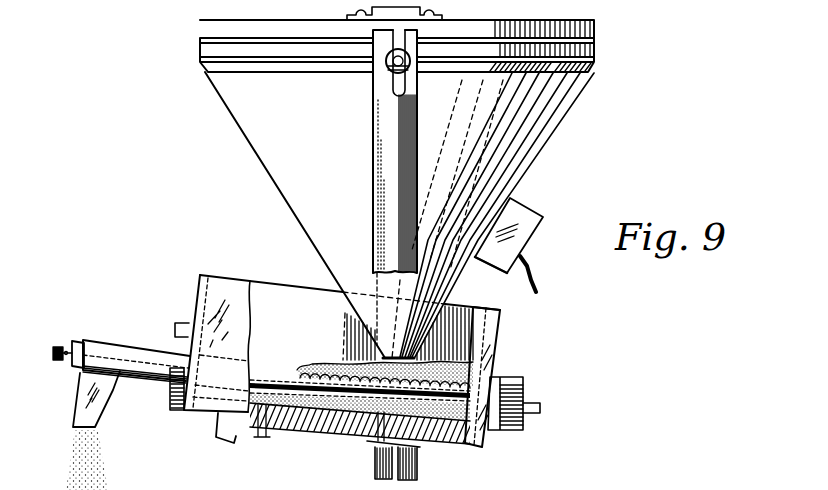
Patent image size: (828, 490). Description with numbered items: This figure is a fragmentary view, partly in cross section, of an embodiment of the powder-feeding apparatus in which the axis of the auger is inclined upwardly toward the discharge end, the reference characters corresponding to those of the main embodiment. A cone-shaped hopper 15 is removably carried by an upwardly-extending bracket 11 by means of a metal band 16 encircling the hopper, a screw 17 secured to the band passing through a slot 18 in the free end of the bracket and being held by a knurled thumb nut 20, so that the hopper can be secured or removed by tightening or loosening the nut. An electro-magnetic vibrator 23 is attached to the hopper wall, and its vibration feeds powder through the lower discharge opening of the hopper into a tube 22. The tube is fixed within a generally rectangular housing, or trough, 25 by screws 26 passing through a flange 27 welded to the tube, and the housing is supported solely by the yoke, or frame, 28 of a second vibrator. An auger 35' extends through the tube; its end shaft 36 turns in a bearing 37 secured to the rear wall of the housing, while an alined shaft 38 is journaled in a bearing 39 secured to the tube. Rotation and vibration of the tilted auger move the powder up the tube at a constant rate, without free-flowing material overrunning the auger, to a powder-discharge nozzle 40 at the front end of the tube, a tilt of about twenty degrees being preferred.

The upwardly-extending bracket 11 is at (375, 165).
The cone-shaped hopper 15 is at (300, 198).
The metal band 16 is at (238, 63).
The screw 17 is at (387, 76).
The slot 18 is at (393, 84).
The knurled thumb nut 20 is at (375, 67).
The tube 22 is at (140, 350).
The electro-magnetic vibrator 23 is at (538, 212).
The housing 25 is at (500, 333).
The screw 26 is at (178, 328).
The flange 27 is at (186, 322).
The yoke or frame 28 is at (230, 441).
The auger 35' is at (381, 352).
The end shaft 36 is at (533, 401).
The bearing 37 is at (512, 383).
The alined shaft 38 is at (60, 345).
The bearing 39 is at (84, 342).
The powder-discharge nozzle 40 is at (97, 409).